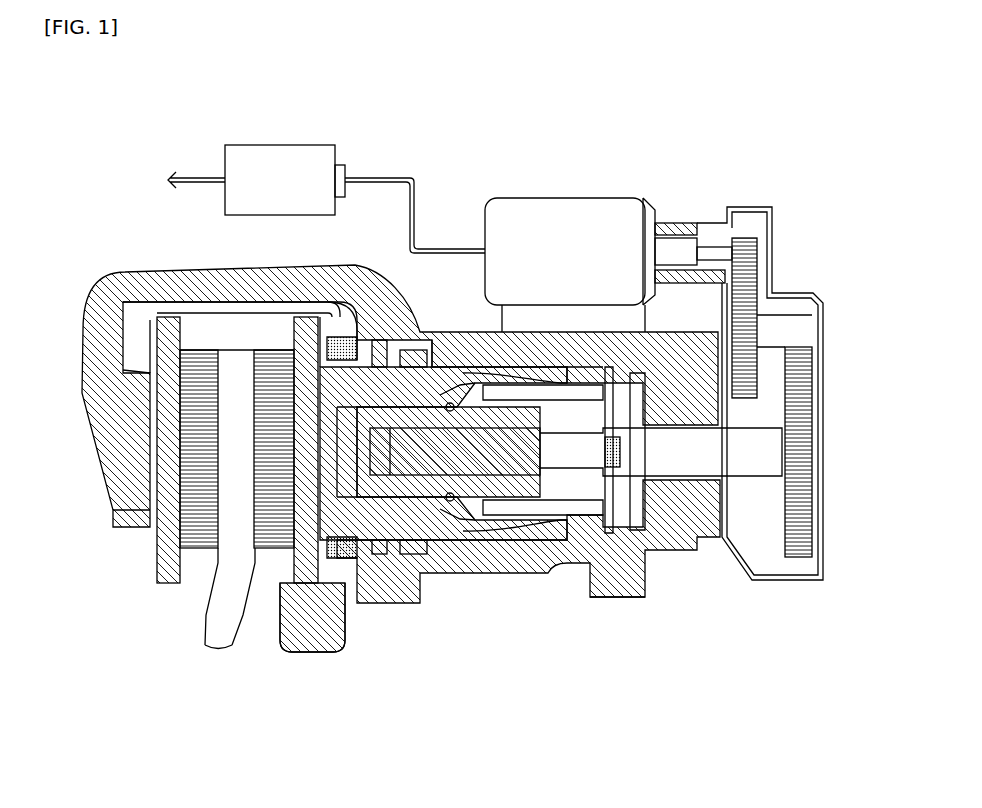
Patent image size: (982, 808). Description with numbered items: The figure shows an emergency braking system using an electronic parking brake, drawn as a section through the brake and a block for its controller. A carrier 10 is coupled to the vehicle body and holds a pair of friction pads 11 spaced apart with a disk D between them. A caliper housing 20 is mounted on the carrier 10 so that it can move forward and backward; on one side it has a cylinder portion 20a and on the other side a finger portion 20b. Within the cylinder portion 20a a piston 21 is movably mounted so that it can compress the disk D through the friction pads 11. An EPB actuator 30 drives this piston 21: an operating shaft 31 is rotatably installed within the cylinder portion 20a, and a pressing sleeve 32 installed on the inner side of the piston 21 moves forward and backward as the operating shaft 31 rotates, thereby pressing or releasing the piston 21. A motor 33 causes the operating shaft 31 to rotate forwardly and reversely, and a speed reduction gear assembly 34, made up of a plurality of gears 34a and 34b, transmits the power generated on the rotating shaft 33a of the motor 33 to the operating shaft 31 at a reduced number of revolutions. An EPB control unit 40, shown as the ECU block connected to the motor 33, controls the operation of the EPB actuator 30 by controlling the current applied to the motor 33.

The carrier 10 is at (345, 665).
The friction pads 11 is at (160, 565).
The caliper housing 20 is at (372, 258).
The cylinder portion 20a is at (553, 576).
The finger portion 20b is at (113, 515).
The piston 21 is at (433, 545).
The EPB actuator 30 is at (608, 223).
The operating shaft 31 is at (475, 505).
The pressing sleeve 32 is at (405, 585).
The motor 33 is at (560, 198).
The rotating shaft 33a is at (672, 250).
The speed reduction gear assembly 34 is at (786, 393).
The gear 34a is at (748, 290).
The gear 34b is at (808, 383).
The EPB control unit 40 is at (250, 145).
The disk D is at (210, 628).